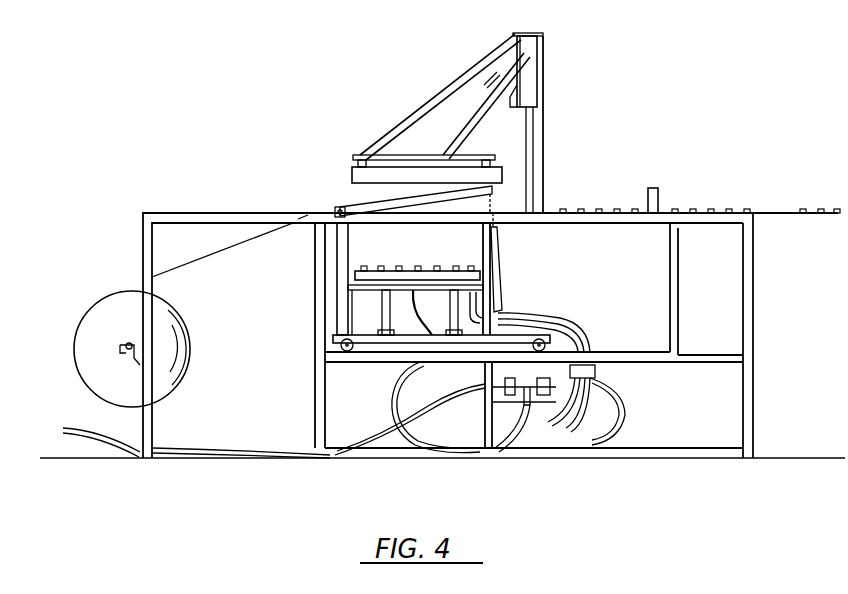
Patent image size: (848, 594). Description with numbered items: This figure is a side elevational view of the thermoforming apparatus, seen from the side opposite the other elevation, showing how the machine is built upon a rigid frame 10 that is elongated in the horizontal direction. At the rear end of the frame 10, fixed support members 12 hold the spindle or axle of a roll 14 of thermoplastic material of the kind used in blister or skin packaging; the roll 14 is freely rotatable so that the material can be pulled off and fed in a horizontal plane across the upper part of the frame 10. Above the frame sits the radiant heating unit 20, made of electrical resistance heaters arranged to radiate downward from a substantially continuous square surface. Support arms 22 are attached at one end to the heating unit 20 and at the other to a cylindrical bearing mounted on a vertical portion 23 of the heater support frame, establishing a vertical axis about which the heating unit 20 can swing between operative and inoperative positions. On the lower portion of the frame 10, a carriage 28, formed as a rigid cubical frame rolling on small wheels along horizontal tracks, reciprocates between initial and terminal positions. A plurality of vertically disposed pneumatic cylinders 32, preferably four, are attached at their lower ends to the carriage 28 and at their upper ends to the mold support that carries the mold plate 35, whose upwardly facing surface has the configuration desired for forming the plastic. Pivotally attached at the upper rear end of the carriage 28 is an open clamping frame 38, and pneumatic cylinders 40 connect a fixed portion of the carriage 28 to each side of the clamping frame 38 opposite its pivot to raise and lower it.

The frame 10 is at (222, 213).
The fixed support members 12 is at (148, 427).
The roll 14 is at (97, 307).
The radiant heating unit 20 is at (352, 172).
The support arms 22 is at (455, 135).
The vertical portion 23 is at (528, 125).
The carriage 28 is at (348, 255).
The pneumatic cylinders 32 is at (452, 318).
The mold plate 35 is at (410, 275).
The open clamping frame 38 is at (365, 205).
The pneumatic cylinders 40 is at (500, 276).